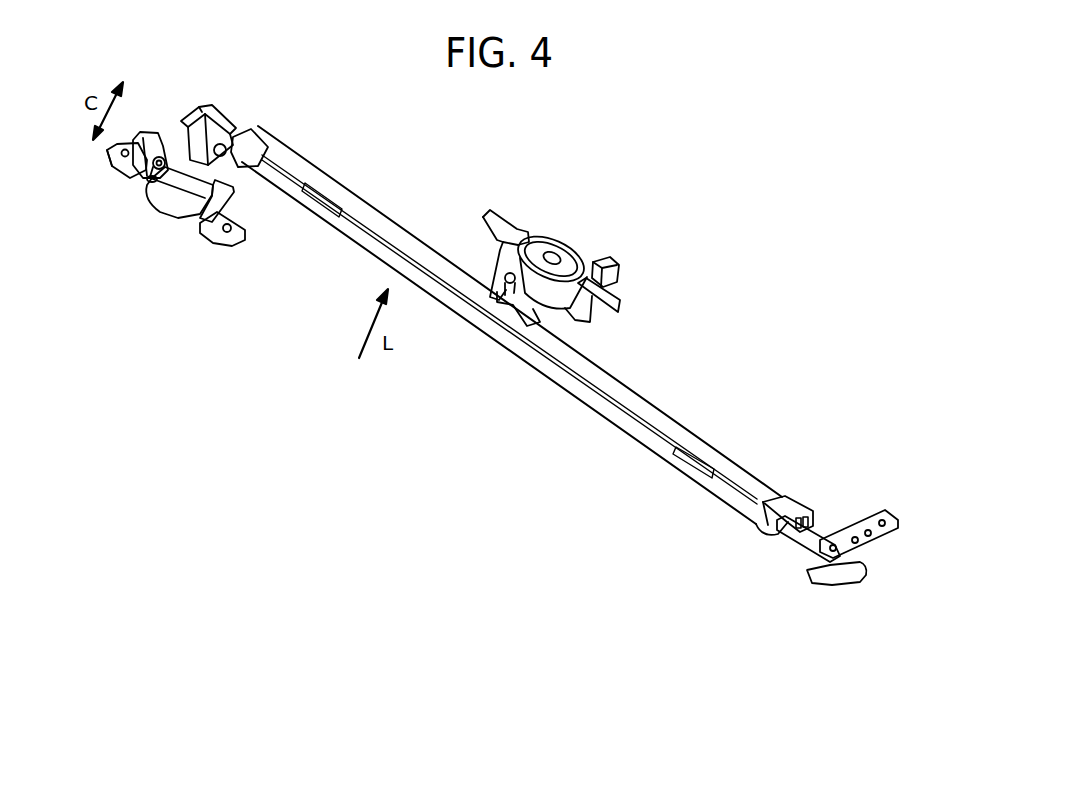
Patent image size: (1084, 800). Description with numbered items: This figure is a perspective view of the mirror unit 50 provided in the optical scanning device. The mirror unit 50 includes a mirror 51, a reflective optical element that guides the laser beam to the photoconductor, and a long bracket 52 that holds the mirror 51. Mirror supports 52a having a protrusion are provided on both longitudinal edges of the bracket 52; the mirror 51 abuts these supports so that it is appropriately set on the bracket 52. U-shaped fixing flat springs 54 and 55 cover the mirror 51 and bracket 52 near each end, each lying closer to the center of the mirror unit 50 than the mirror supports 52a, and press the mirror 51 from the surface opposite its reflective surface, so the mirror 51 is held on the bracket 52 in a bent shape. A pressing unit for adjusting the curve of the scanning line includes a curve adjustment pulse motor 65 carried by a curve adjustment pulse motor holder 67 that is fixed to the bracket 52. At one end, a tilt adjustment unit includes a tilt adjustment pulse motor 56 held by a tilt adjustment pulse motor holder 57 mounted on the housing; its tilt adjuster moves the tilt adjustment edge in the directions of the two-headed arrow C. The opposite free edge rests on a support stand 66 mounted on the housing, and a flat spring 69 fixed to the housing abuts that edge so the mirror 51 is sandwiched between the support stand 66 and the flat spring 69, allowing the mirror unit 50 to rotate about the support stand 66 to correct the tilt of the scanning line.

The mirror unit 50 is at (736, 230).
The mirror 51 is at (793, 547).
The bracket 52 is at (653, 412).
The mirror supports 52a is at (815, 522).
The fixing flat spring 54 is at (270, 142).
The fixing flat spring 55 is at (794, 505).
The tilt adjustment pulse motor 56 is at (170, 203).
The tilt adjustment pulse motor holder 57 is at (228, 197).
The curve adjustment pulse motor 65 is at (571, 258).
The support stand 66 is at (842, 583).
The curve adjustment pulse motor holder 67 is at (503, 213).
The flat spring 69 is at (882, 521).